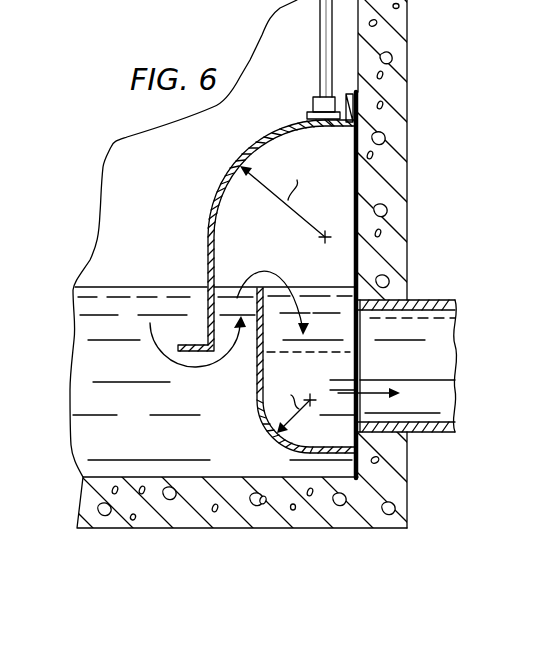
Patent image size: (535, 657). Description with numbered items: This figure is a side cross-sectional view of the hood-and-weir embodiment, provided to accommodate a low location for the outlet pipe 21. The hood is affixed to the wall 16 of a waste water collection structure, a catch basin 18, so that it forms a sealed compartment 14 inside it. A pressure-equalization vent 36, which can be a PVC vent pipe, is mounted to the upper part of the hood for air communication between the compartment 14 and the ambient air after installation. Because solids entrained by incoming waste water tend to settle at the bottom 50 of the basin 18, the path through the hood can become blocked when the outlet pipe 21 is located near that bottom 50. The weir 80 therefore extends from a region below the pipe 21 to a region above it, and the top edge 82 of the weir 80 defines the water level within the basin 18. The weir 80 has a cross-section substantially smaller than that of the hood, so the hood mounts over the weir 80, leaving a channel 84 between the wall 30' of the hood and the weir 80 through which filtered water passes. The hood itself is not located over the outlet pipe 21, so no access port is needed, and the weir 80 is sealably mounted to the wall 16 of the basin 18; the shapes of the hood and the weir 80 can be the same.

The compartment 14 is at (266, 234).
The wall 16 is at (370, 52).
The catch basin 18 is at (93, 210).
The discharge pipe 21 is at (441, 273).
The wall of hood 30' is at (256, 235).
The pressure-equalization vent 36 is at (322, 13).
The bottom 50 is at (88, 503).
The weir 80 is at (259, 392).
The top edge 82 is at (268, 273).
The channel 84 is at (244, 346).